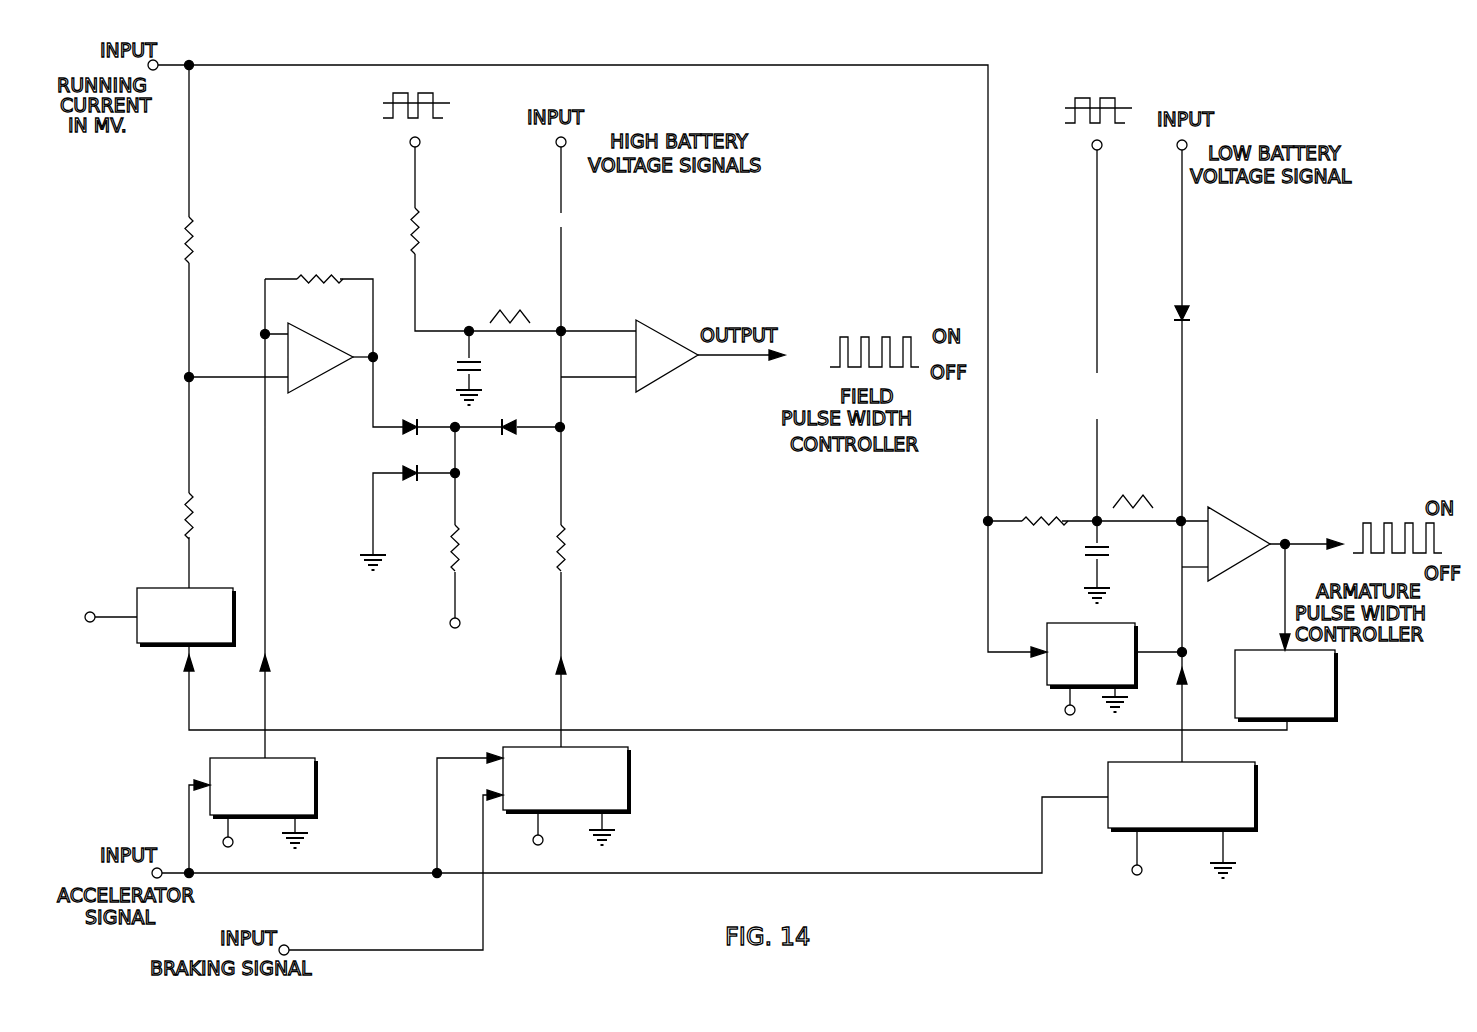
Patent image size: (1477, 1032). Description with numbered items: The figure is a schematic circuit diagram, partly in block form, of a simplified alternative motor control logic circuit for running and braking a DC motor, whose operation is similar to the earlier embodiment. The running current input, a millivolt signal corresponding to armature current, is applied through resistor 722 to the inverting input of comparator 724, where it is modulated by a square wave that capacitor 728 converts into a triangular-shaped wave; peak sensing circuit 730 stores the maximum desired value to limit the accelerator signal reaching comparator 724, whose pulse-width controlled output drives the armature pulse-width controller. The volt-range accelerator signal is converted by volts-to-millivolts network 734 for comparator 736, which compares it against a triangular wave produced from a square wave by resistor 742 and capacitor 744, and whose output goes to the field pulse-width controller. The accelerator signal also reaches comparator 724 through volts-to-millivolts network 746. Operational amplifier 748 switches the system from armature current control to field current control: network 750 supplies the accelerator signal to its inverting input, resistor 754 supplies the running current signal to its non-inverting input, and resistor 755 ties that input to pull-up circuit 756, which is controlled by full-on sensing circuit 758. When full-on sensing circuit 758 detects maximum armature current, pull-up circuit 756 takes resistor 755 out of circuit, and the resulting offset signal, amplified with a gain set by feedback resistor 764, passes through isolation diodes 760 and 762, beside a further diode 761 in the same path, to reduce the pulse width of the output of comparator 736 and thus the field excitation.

The resistor 722 is at (1036, 515).
The operational amplifier 724 is at (1248, 525).
The capacitor 728 is at (1085, 550).
The peak sensing circuit 730 is at (1047, 673).
The volts-to-millivolts network 734 is at (628, 795).
The operational amplifier 736 is at (664, 333).
The resistor 742 is at (420, 231).
The capacitor 744 is at (482, 368).
The volts-to-millivolts network 746 is at (1255, 795).
The operational amplifier 748 is at (306, 378).
The volts-to-millivolts network 750 is at (315, 790).
The resistor 754 is at (195, 232).
The resistor 755 is at (192, 513).
The pull-up circuit 756 is at (205, 588).
The full-on sensing circuit 758 is at (1335, 667).
The diode 760 is at (418, 401).
The diode 761 is at (409, 485).
The diode 762 is at (508, 440).
The resistor 764 is at (318, 272).